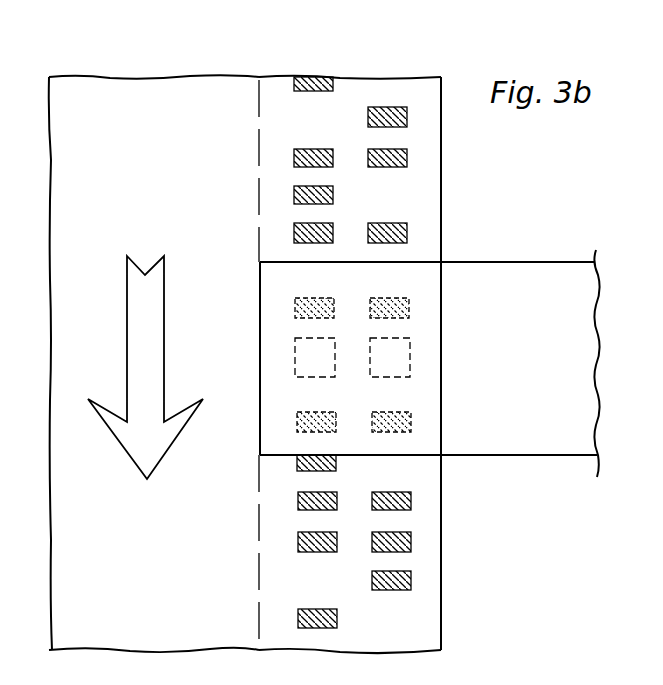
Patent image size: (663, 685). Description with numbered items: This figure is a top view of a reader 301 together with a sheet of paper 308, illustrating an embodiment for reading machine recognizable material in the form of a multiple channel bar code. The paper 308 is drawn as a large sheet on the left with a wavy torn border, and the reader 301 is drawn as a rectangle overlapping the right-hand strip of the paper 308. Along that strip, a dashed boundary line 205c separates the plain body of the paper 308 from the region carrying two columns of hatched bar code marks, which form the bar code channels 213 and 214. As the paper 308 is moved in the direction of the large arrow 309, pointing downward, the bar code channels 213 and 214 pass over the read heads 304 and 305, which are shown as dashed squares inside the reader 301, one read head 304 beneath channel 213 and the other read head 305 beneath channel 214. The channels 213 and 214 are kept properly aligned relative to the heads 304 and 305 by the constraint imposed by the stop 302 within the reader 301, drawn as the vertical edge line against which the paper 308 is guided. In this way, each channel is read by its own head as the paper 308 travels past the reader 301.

The paper 308 is at (157, 100).
The boundary line 205c is at (276, 98).
The bar code channel 213 is at (314, 76).
The bar code channel 214 is at (386, 95).
The reader 301 is at (428, 286).
The stop 302 is at (440, 438).
The read head 304 is at (296, 343).
The read head 305 is at (368, 376).
The arrow 309 is at (137, 356).